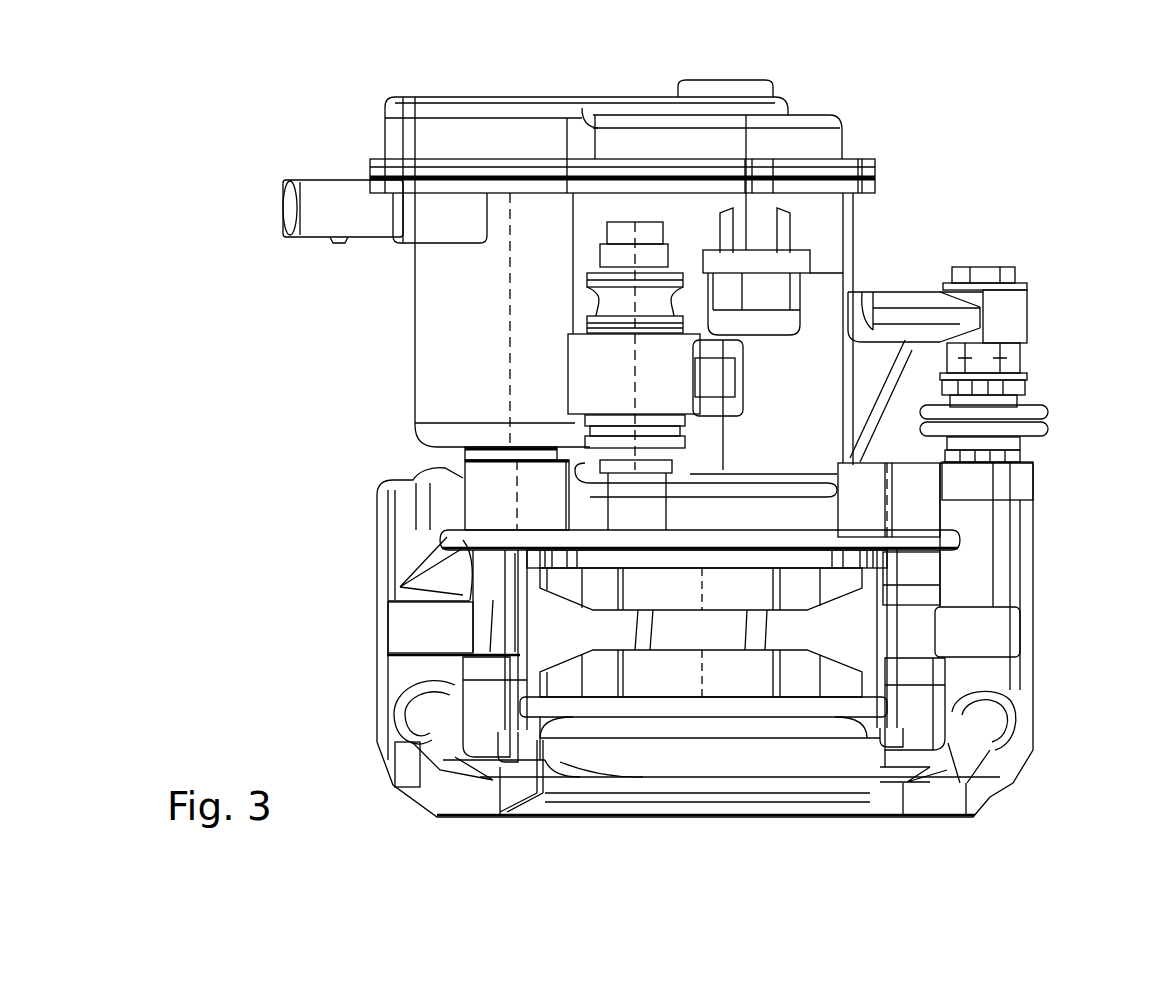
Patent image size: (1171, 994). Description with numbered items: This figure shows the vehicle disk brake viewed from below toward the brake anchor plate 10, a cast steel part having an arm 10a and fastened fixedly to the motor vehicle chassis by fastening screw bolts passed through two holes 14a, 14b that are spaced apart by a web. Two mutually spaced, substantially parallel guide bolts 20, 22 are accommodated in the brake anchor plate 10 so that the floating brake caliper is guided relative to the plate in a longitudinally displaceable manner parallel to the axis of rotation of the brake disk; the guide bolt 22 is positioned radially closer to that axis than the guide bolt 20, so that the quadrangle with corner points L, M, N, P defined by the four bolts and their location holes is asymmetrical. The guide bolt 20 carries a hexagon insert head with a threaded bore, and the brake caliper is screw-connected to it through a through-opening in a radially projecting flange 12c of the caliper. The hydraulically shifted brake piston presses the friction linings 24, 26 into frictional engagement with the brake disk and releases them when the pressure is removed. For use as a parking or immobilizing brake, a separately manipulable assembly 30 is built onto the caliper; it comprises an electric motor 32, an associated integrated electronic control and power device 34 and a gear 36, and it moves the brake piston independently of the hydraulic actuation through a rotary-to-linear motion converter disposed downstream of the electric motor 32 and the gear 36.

The brake anchor plate 10 is at (1058, 639).
The arm 10a is at (1003, 532).
The flange 12c is at (905, 300).
The hole 14a is at (915, 517).
The hole 14b is at (455, 470).
The guide bolt 20 is at (1003, 272).
The guide bolt 22 is at (632, 225).
The friction lining 24 is at (802, 592).
The friction lining 26 is at (600, 675).
The separately manipulable assembly 30 is at (878, 126).
The electric motor 32 is at (442, 315).
The integrated electronic control and power device 34 is at (440, 140).
The gear 36 is at (704, 224).
The corner point P is at (650, 232).
The corner point N is at (985, 270).
The corner point L is at (500, 448).
The corner point M is at (888, 520).